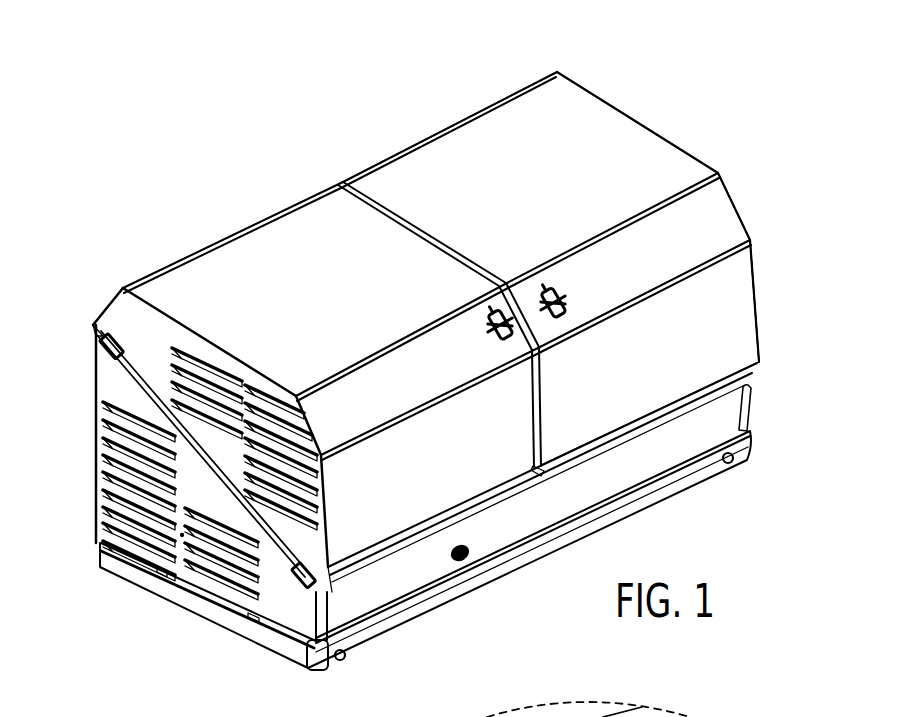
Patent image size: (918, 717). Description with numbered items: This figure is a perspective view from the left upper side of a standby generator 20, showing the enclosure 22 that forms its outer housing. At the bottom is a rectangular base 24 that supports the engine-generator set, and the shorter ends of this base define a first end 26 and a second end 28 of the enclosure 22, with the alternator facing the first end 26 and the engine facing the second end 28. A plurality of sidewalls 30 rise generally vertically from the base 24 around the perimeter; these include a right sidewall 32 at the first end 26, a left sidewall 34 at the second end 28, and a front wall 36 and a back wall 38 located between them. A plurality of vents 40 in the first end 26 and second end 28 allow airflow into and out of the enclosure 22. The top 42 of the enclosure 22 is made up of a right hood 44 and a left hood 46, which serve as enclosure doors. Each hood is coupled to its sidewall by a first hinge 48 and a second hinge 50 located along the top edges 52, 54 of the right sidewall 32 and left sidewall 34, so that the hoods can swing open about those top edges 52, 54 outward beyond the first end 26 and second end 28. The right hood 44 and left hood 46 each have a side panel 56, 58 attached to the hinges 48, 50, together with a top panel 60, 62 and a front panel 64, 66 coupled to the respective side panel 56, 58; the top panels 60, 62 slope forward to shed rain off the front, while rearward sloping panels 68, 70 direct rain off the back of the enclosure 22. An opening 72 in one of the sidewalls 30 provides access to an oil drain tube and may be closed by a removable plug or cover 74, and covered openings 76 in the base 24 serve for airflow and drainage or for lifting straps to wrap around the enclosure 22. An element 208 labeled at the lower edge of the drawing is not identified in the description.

The standby generator 20 is at (686, 48).
The enclosure 22 is at (630, 115).
The base 24 is at (752, 442).
The first end 26 is at (778, 281).
The second end 28 is at (150, 625).
The sidewalls 30 is at (752, 405).
The right sidewall 32 is at (773, 366).
The left sidewall 34 is at (287, 612).
The front wall 36 is at (665, 447).
The back wall 38 is at (78, 436).
The vents 40 is at (138, 503).
The top 42 is at (716, 156).
The right hood 44 is at (613, 227).
The left hood 46 is at (401, 333).
The first hinge 48 is at (116, 335).
The second hinge 50 is at (347, 561).
The top edge of right sidewall 52 is at (772, 221).
The top edge of left sidewall 54 is at (232, 497).
The side panel of right hood 56 is at (668, 106).
The side panel of left hood 58 is at (150, 360).
The top panel of right hood 60 is at (540, 100).
The top panel of left hood 62 is at (215, 265).
The front panel of right hood 64 is at (713, 340).
The front panel of left hood 66 is at (480, 458).
The rearward sloping panel of right hood 68 is at (433, 110).
The rearward sloping panel of left hood 70 is at (226, 211).
The opening 72 is at (459, 562).
The removable plug or cover 74 is at (478, 566).
The covered openings 76 is at (344, 661).
The fuel line 208 is at (723, 716).